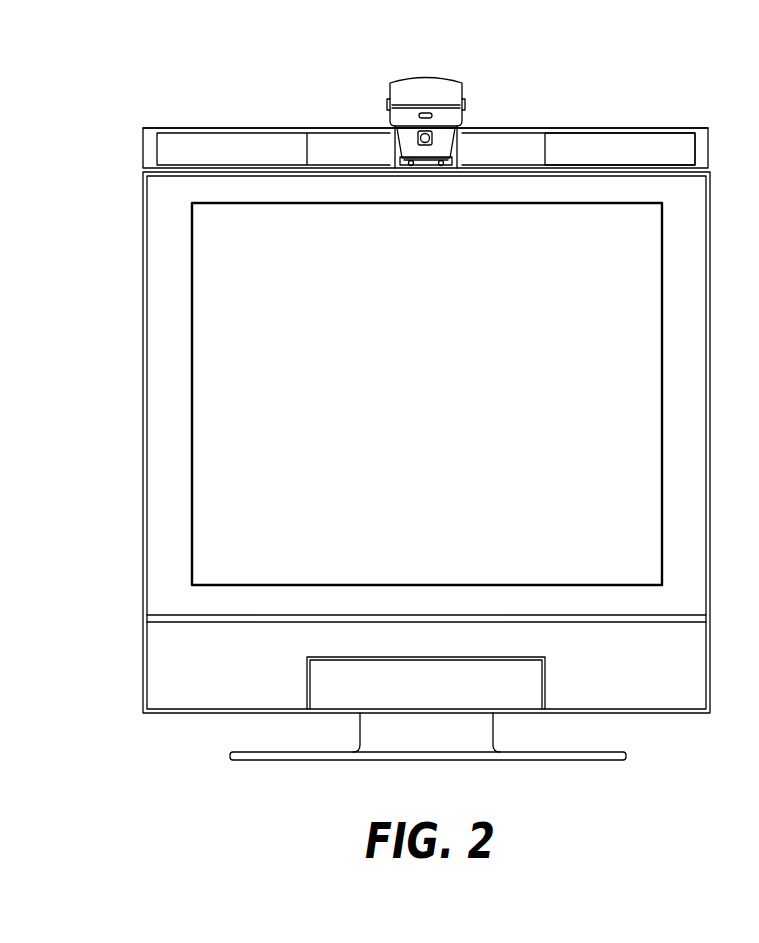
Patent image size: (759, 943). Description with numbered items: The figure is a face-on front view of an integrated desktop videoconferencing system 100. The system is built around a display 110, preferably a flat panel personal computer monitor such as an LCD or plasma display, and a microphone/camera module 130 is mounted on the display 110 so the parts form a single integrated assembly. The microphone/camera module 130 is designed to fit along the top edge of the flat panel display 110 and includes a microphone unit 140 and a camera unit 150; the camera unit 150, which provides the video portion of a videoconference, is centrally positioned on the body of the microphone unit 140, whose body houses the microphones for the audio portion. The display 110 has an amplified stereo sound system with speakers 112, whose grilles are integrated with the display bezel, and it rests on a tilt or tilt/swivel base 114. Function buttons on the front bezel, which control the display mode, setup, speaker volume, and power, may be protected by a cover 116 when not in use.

The integrated desktop videoconferencing system 100 is at (112, 134).
The display 110 is at (143, 297).
The speakers 112 is at (158, 715).
The tilt or tilt/swivel base 114 is at (270, 760).
The cover 116 is at (548, 692).
The microphone/camera module 130 is at (254, 106).
The microphone unit 140 is at (612, 129).
The camera unit 150 is at (450, 74).